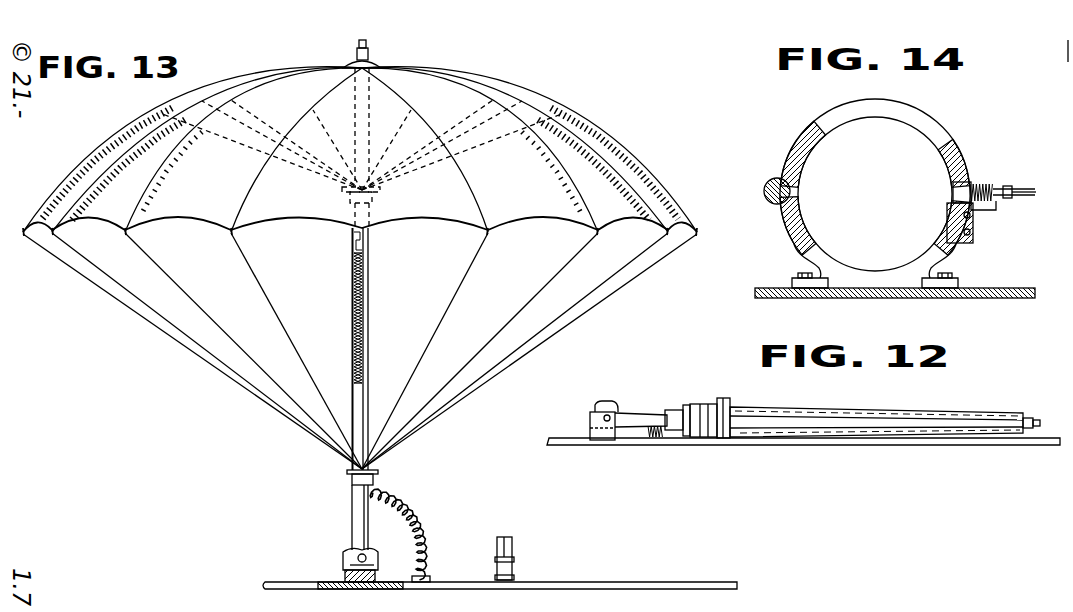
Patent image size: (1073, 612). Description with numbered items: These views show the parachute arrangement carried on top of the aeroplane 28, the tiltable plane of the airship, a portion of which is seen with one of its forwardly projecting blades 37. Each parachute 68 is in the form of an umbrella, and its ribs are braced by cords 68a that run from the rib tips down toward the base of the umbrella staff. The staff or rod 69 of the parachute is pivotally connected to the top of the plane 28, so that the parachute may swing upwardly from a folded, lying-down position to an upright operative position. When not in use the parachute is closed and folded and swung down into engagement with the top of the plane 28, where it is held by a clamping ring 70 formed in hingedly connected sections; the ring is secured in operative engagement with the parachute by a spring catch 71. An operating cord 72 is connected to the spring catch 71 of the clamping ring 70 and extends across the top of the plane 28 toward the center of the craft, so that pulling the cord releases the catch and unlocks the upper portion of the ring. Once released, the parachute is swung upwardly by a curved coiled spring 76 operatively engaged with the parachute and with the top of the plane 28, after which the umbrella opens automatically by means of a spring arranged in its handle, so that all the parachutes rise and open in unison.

In FIG. 13, the parachute 68 is at (462, 92).
In FIG. 12, the parachute 68 is at (877, 433).
In FIG. 13, the cords 68a is at (219, 367).
In FIG. 13, the staff or rod 69 is at (367, 393).
In FIG. 12, the staff or rod 69 is at (633, 420).
In FIG. 13, the clamping ring 70 is at (517, 528).
In FIG. 14, the clamping ring 70 is at (932, 131).
In FIG. 12, the clamping ring 70 is at (725, 398).
In FIG. 13, the spring catch 71 is at (367, 302).
In FIG. 14, the spring catch 71 is at (1003, 186).
In FIG. 14, the operating cord 72 is at (1022, 197).
In FIG. 13, the curved coiled spring 76 is at (417, 523).
In FIG. 12, the curved coiled spring 76 is at (647, 431).
In FIG. 13, the forwardly projecting blade 37 is at (283, 581).
In FIG. 13, the aeroplane 28 is at (650, 582).
In FIG. 14, the aeroplane 28 is at (877, 294).
In FIG. 12, the aeroplane 28 is at (963, 444).